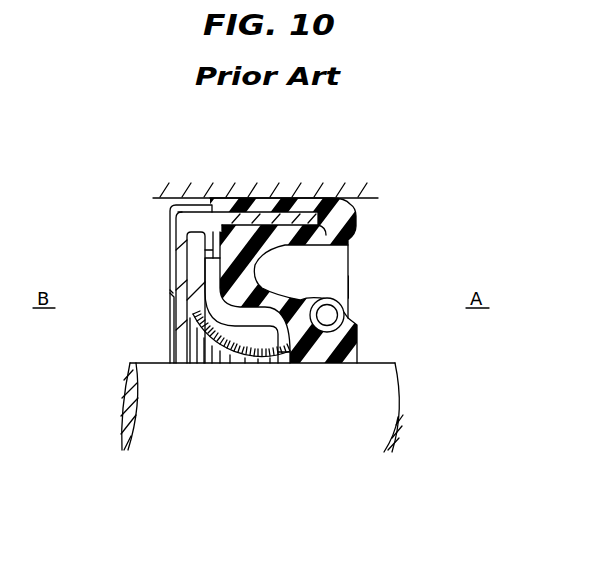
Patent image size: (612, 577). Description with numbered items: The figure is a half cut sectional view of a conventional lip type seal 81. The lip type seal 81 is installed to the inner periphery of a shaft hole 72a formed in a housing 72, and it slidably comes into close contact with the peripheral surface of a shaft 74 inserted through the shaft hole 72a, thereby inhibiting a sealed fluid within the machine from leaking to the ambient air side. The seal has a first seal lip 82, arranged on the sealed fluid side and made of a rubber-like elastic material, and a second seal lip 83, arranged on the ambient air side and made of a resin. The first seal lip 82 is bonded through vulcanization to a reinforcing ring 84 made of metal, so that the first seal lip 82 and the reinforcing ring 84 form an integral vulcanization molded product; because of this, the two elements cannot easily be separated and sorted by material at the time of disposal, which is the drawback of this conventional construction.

The housing 72 is at (367, 192).
The shaft hole 72a is at (162, 211).
The shaft 74 is at (340, 428).
The lip type seal 81 is at (358, 283).
The first seal lip 82 is at (320, 340).
The second seal lip 83 is at (246, 345).
The reinforcing ring 84 is at (182, 275).